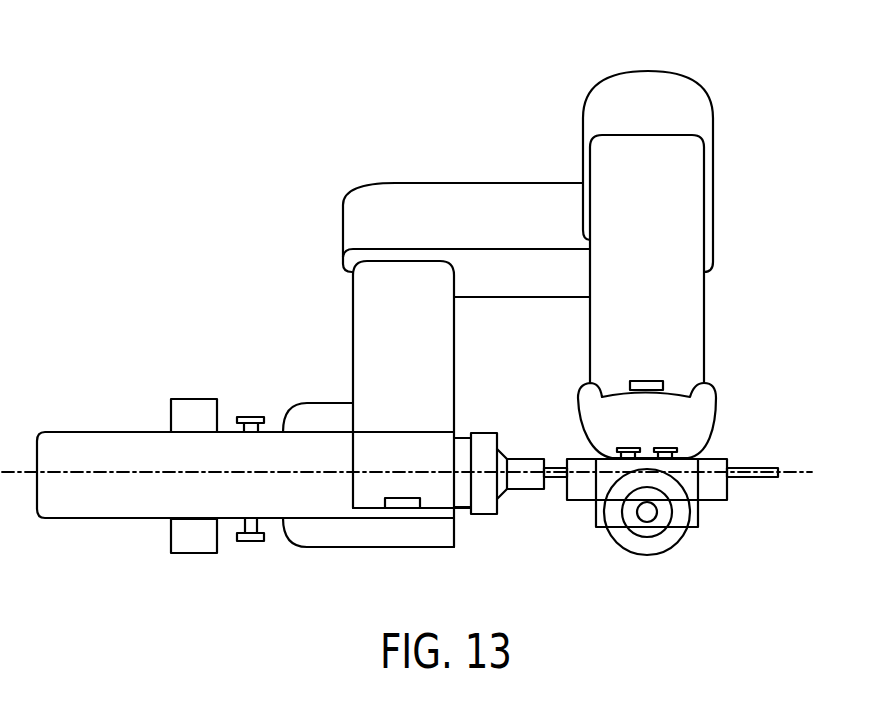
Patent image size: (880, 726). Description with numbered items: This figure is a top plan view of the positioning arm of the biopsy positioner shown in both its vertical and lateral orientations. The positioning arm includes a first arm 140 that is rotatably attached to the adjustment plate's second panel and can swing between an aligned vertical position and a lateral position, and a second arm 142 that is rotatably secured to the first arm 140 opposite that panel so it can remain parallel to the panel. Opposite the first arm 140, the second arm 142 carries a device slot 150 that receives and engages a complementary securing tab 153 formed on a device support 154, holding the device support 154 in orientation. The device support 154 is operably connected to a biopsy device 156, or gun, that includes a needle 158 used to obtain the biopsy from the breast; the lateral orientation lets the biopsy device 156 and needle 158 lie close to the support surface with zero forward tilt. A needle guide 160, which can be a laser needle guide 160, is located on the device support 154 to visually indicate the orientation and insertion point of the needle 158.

The first arm 140 is at (654, 96).
The second arm 142 is at (425, 318).
The device slot 150 is at (403, 497).
The tab 153 is at (655, 411).
The device support 154 is at (108, 492).
The biopsy device 156 is at (651, 545).
The needle 158 is at (752, 478).
The needle guide 160 is at (484, 503).